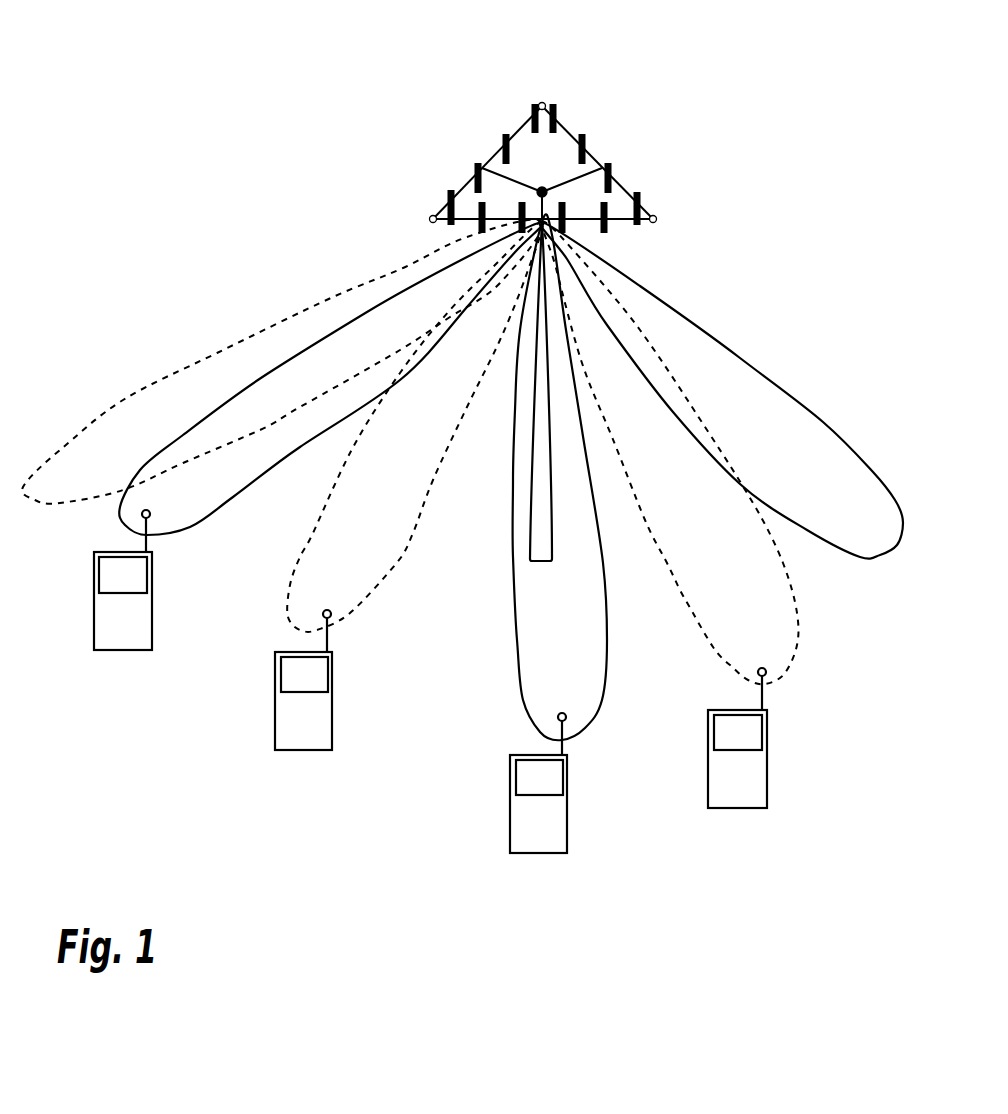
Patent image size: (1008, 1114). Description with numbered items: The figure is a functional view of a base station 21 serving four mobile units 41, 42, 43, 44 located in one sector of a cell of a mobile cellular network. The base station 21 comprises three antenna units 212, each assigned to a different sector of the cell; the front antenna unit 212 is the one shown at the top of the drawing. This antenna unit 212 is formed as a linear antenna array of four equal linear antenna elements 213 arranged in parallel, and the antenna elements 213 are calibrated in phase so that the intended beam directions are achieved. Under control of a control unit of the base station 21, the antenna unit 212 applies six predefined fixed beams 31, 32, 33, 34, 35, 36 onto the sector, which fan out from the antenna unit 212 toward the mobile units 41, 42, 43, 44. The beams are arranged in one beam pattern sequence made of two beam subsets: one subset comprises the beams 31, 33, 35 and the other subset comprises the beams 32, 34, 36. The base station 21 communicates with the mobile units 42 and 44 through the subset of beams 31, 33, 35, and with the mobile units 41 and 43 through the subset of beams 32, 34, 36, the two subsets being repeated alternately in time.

The base station 21 is at (693, 136).
The antenna unit 212 is at (468, 150).
The linear antenna elements 213 is at (640, 198).
The beam 31 is at (75, 493).
The beam 32 is at (202, 511).
The beam 33 is at (357, 588).
The beam 34 is at (569, 698).
The beam 35 is at (762, 652).
The beam 36 is at (880, 541).
The mobile unit 41 is at (112, 642).
The mobile unit 42 is at (297, 744).
The mobile unit 43 is at (523, 847).
The mobile unit 44 is at (720, 804).